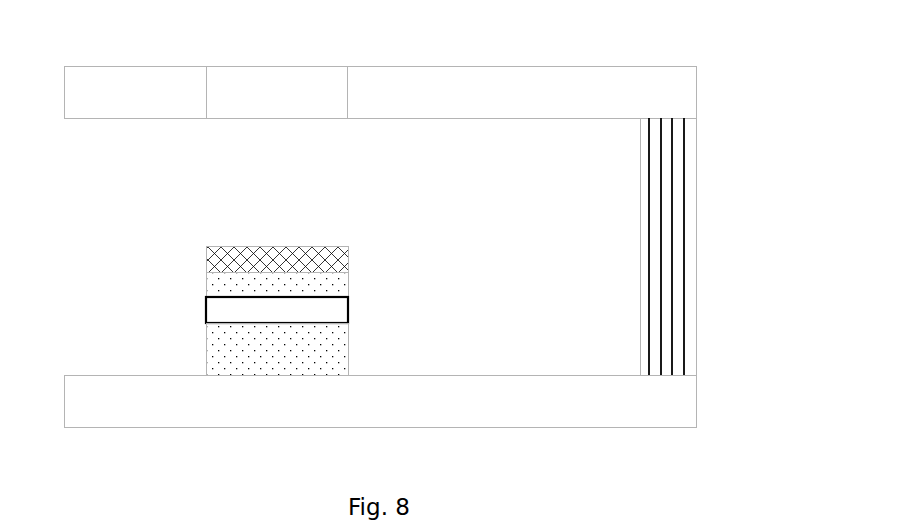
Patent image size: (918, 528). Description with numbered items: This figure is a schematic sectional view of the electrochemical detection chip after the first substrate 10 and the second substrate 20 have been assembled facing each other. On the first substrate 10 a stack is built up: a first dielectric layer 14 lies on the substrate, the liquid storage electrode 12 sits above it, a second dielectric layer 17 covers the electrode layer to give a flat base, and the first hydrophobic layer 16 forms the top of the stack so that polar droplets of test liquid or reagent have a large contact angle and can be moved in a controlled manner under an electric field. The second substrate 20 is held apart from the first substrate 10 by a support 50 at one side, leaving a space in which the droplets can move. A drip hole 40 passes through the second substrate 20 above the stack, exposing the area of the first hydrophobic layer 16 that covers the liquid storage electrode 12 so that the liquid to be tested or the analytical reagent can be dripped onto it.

The first substrate 10 is at (657, 401).
The second substrate 20 is at (657, 92).
The drip hole 40 is at (283, 87).
The support 50 is at (680, 227).
The liquid storage electrode 12 is at (340, 309).
The first dielectric layer 14 is at (340, 350).
The first hydrophobic layer 16 is at (342, 257).
The second dielectric layer 17 is at (340, 283).